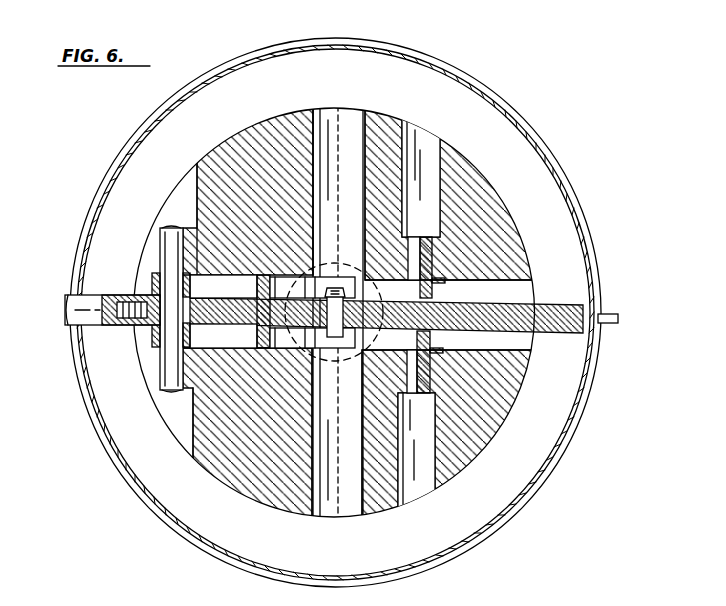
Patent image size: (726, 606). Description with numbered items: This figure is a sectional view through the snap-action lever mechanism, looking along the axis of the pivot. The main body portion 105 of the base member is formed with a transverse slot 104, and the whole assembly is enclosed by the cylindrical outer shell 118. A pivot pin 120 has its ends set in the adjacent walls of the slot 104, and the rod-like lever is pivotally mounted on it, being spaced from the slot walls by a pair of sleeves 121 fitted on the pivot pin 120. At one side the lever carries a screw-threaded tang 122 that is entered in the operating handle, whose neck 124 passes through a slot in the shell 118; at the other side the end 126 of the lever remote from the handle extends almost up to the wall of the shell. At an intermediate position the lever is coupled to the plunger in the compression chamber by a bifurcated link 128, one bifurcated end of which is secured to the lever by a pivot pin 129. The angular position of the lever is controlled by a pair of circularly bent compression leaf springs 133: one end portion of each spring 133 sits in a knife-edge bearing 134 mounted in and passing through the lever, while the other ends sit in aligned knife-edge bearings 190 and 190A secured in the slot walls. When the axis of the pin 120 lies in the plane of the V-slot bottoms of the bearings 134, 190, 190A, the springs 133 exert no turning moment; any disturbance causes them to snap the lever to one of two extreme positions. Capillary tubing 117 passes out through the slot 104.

The transverse slot 104 is at (235, 296).
The main body portion 105 is at (235, 478).
The capillary tubing 117 is at (606, 313).
The cylindrical outer shell 118 is at (112, 453).
The pivot pin 120 is at (160, 240).
The sleeves 121 is at (152, 282).
The screw-threaded tang 122 is at (130, 320).
The neck 124 is at (68, 295).
The end of the lever 126 is at (555, 304).
The link 128 is at (338, 290).
The pivot pin 129 is at (336, 338).
The compression leaf springs 133 is at (300, 280).
The knife-edge bearing 134 is at (257, 338).
The knife-edge bearing 190 is at (419, 314).
The knife-edge bearing 190A is at (430, 262).